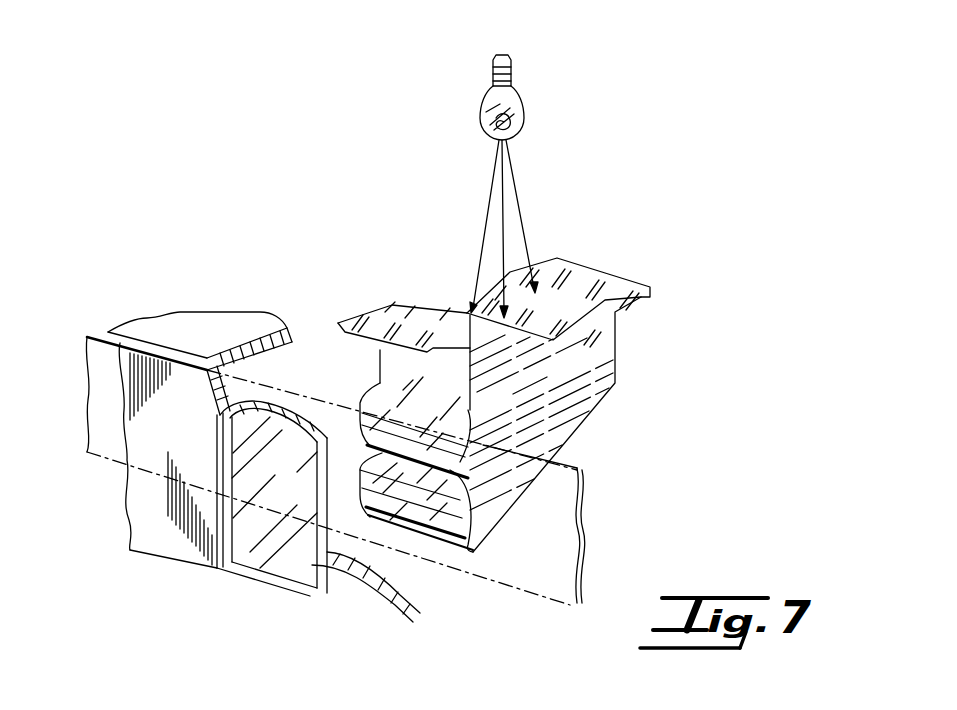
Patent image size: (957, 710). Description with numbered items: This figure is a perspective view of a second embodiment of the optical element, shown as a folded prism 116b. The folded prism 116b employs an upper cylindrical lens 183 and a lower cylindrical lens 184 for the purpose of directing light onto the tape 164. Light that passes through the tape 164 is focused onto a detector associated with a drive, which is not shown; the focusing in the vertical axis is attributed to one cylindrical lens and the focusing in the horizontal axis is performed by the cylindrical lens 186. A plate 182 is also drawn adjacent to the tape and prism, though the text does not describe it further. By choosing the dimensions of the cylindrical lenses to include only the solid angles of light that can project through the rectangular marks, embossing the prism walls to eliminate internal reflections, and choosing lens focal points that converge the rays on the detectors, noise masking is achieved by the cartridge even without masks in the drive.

The folded prism 116b is at (531, 440).
The tape 164 is at (585, 552).
The plate 182 is at (228, 313).
The upper cylindrical lens 183 is at (380, 383).
The lower cylindrical lens 184 is at (440, 513).
The cylindrical lens 186 is at (223, 567).